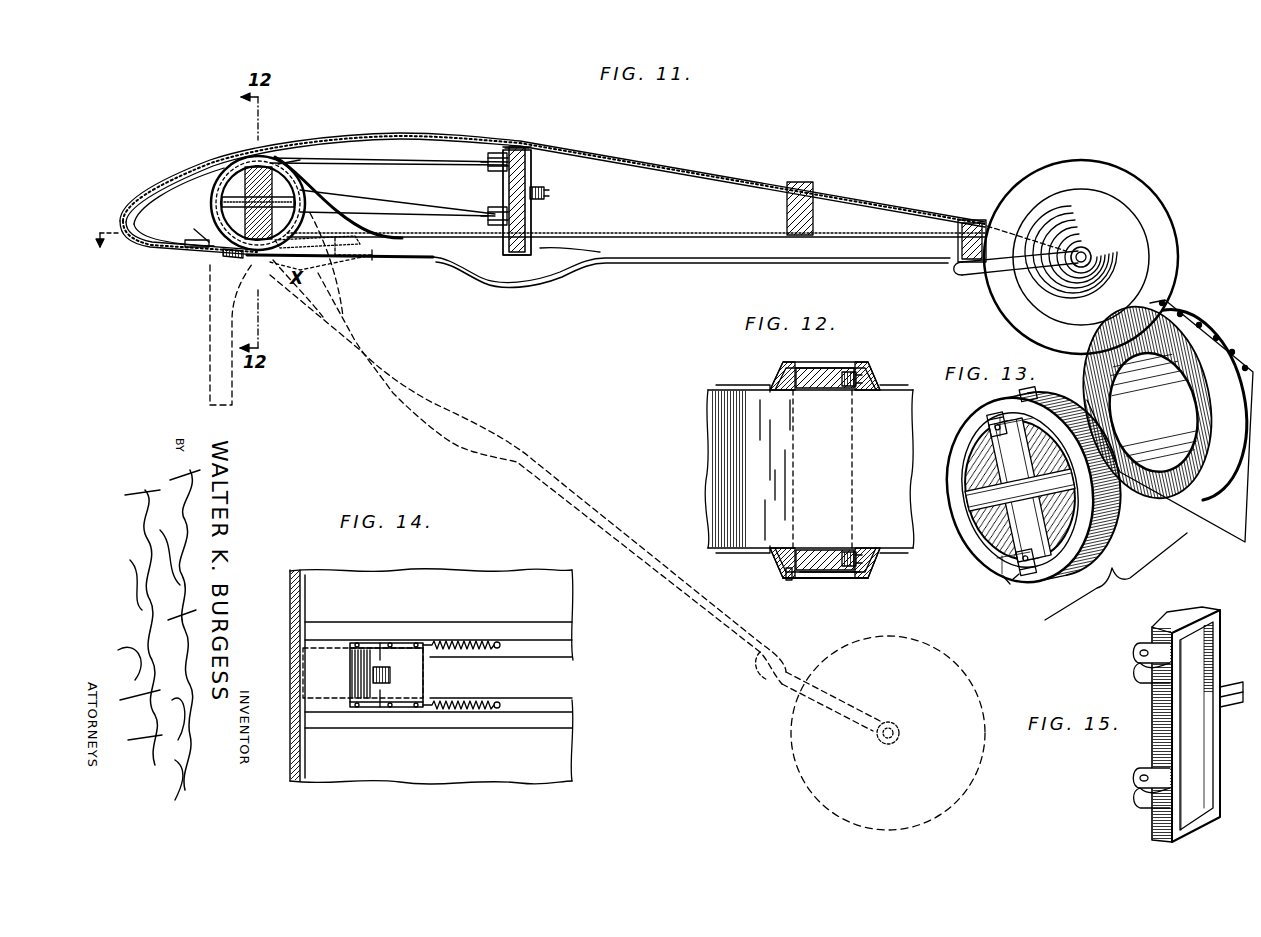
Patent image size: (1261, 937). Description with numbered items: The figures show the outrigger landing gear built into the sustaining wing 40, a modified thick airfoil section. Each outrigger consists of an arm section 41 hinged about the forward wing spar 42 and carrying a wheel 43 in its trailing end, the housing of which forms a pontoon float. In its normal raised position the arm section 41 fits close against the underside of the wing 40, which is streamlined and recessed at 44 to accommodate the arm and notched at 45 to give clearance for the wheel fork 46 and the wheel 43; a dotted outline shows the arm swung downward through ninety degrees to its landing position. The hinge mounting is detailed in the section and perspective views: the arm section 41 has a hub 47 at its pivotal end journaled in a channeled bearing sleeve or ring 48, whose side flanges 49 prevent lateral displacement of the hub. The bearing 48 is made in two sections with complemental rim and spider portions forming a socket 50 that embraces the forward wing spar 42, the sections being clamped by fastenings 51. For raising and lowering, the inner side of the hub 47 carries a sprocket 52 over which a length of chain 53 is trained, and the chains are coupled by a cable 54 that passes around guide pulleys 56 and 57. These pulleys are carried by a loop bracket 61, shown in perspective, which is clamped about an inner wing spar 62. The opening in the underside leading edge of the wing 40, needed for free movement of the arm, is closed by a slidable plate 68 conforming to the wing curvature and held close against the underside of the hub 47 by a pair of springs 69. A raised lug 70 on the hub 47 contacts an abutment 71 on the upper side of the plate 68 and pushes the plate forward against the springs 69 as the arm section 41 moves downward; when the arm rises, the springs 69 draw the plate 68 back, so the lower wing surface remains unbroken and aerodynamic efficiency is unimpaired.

In FIG. 11, the sustaining wing 40 is at (420, 136).
In FIG. 12, the sustaining wing 40 is at (732, 388).
In FIG. 14, the sustaining wing 40 is at (418, 578).
In FIG. 11, the arm section 41 is at (608, 262).
In FIG. 11, the forward wing spar 42 is at (270, 170).
In FIG. 12, the forward wing spar 42 is at (712, 455).
In FIG. 11, the wheel 43 is at (1155, 190).
In FIG. 11, the recess 44 is at (710, 238).
In FIG. 12, the recess 44 is at (872, 568).
In FIG. 11, the notch 45 is at (984, 222).
In FIG. 11, the wheel fork 46 is at (966, 275).
In FIG. 11, the hub 47 is at (320, 195).
In FIG. 12, the hub 47 is at (814, 370).
In FIG. 13, the hub 47 is at (1192, 335).
In FIG. 11, the bearing sleeve or ring 48 is at (306, 213).
In FIG. 12, the bearing sleeve or ring 48 is at (790, 368).
In FIG. 13, the bearing sleeve or ring 48 is at (978, 520).
In FIG. 12, the side flange 49 is at (792, 575).
In FIG. 13, the side flange 49 is at (966, 416).
In FIG. 11, the socket 50 is at (222, 200).
In FIG. 13, the socket 50 is at (1003, 545).
In FIG. 13, the fastening 51 is at (1008, 578).
In FIG. 12, the sprocket 52 is at (858, 372).
In FIG. 13, the sprocket 52 is at (1172, 306).
In FIG. 11, the chain 53 is at (320, 160).
In FIG. 12, the chain 53 is at (845, 575).
In FIG. 11, the cable 54 is at (433, 166).
In FIG. 11, the guide pulley 56 is at (490, 210).
In FIG. 15, the guide pulley 56 is at (1132, 800).
In FIG. 11, the guide pulley 57 is at (492, 152).
In FIG. 15, the guide pulley 57 is at (1132, 670).
In FIG. 11, the loop bracket 61 is at (540, 192).
In FIG. 15, the loop bracket 61 is at (1160, 725).
In FIG. 11, the inner wing spar 62 is at (527, 147).
In FIG. 11, the plate 68 is at (240, 258).
In FIG. 14, the plate 68 is at (400, 642).
In FIG. 14, the spring 69 is at (470, 640).
In FIG. 11, the lug 70 is at (215, 252).
In FIG. 13, the lug 70 is at (1125, 480).
In FIG. 11, the abutment 71 is at (190, 230).
In FIG. 14, the abutment 71 is at (378, 700).